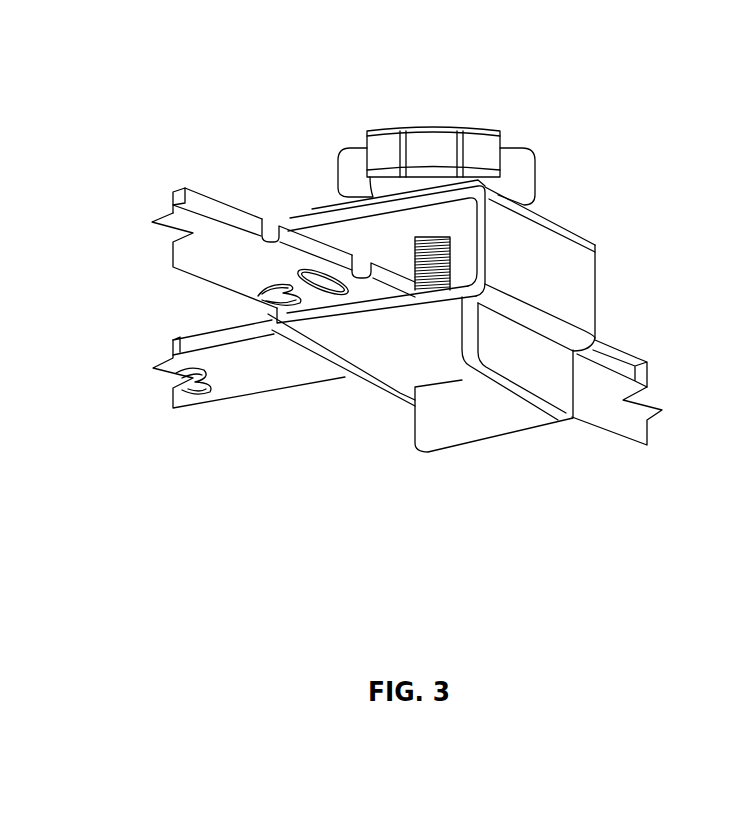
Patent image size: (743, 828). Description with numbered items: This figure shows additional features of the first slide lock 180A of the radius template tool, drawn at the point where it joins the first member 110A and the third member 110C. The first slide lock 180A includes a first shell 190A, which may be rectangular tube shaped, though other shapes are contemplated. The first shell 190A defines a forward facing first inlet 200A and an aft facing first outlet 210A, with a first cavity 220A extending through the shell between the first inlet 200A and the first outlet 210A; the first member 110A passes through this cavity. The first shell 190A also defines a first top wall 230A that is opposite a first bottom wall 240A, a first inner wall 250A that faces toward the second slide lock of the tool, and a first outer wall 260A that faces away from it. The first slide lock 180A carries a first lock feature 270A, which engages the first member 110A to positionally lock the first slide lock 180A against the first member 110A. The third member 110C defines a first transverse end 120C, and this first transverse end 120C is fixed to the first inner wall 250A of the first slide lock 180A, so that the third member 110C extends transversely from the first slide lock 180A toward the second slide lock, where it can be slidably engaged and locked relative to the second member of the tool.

The first member 110A is at (440, 319).
The third member 110C is at (257, 377).
The first transverse end 120C is at (340, 380).
The first slide lock 180A is at (398, 293).
The first shell 190A is at (640, 352).
The first inlet 200A is at (300, 223).
The first outlet 210A is at (588, 298).
The first cavity 220A is at (291, 287).
The first top wall 230A is at (550, 217).
The first bottom wall 240A is at (435, 445).
The first inner wall 250A is at (280, 314).
The first outer wall 260A is at (557, 287).
The first lock feature 270A is at (473, 128).